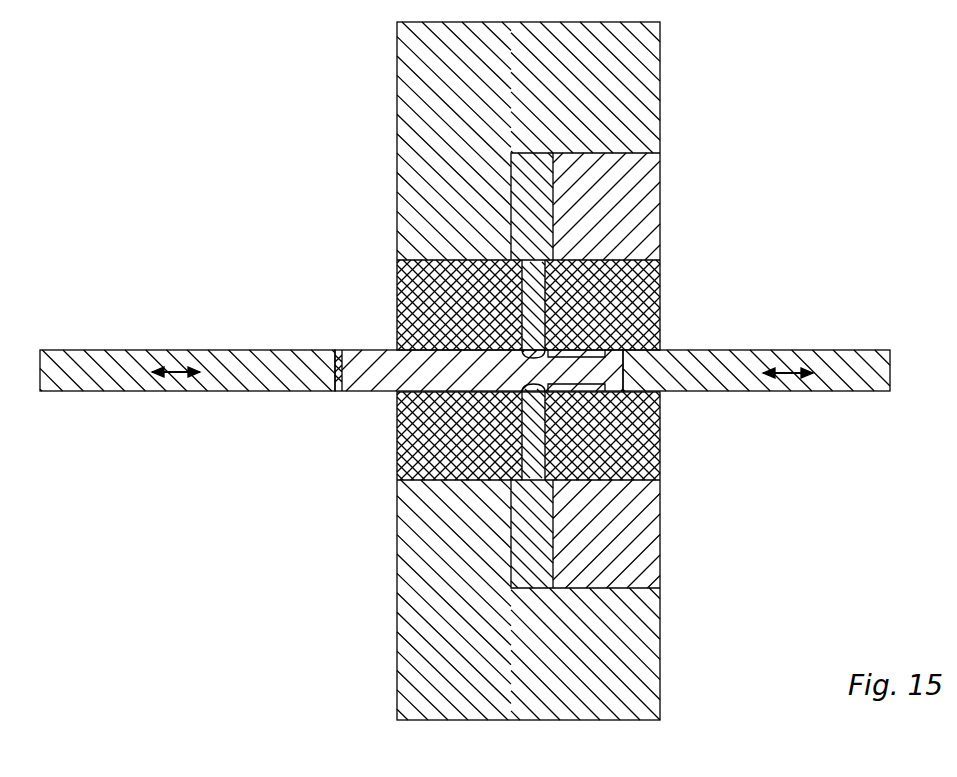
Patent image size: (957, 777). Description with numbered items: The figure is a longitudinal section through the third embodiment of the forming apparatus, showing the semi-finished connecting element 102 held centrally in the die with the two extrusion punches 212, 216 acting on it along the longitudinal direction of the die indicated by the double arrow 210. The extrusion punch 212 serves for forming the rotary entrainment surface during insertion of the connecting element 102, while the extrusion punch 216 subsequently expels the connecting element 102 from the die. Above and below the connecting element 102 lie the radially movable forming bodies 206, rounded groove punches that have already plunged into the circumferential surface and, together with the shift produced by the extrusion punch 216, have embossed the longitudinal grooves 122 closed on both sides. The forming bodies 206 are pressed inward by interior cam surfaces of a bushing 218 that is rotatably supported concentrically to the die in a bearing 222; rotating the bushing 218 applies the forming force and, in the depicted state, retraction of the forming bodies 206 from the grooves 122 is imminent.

The semi-finished connecting element 102 is at (603, 368).
The longitudinal groove closed on both sides 122 is at (577, 357).
The radially movable forming body 206 is at (527, 304).
The double arrow 210 is at (172, 378).
The extrusion punch 212 is at (862, 350).
The extrusion punch 216 is at (77, 352).
The bushing 218 is at (527, 200).
The bearing 222 is at (638, 88).